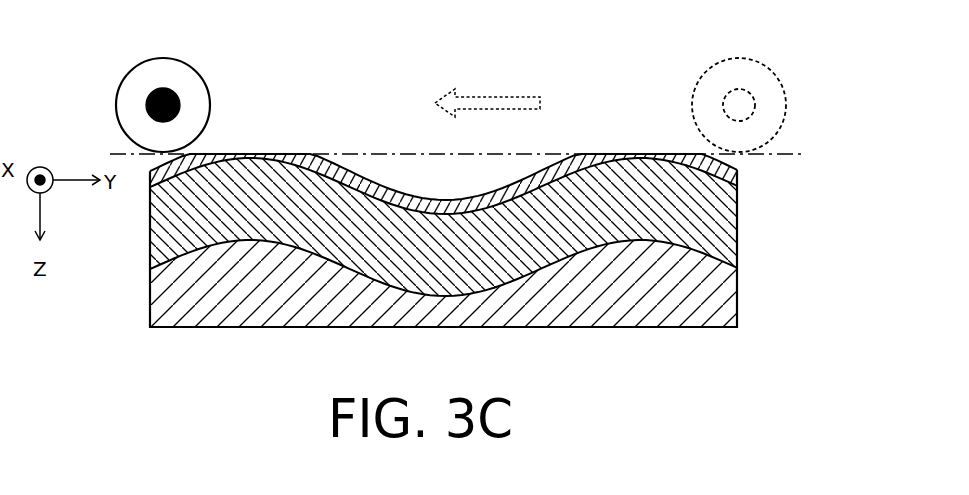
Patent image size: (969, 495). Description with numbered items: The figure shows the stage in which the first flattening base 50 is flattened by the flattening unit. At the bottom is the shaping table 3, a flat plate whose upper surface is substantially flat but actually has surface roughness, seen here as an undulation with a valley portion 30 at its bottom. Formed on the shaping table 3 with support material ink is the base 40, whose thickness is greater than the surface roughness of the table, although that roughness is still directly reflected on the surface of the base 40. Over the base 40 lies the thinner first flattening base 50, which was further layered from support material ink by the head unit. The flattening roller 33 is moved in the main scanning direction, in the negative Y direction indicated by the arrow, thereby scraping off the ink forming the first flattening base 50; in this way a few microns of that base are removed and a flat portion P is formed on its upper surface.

The shaping table 3 is at (238, 318).
The valley portion 30 is at (425, 172).
The flattening roller 33 is at (182, 72).
The base 40 is at (163, 230).
The first flattening base 50 is at (300, 157).
The flat portion P is at (623, 146).